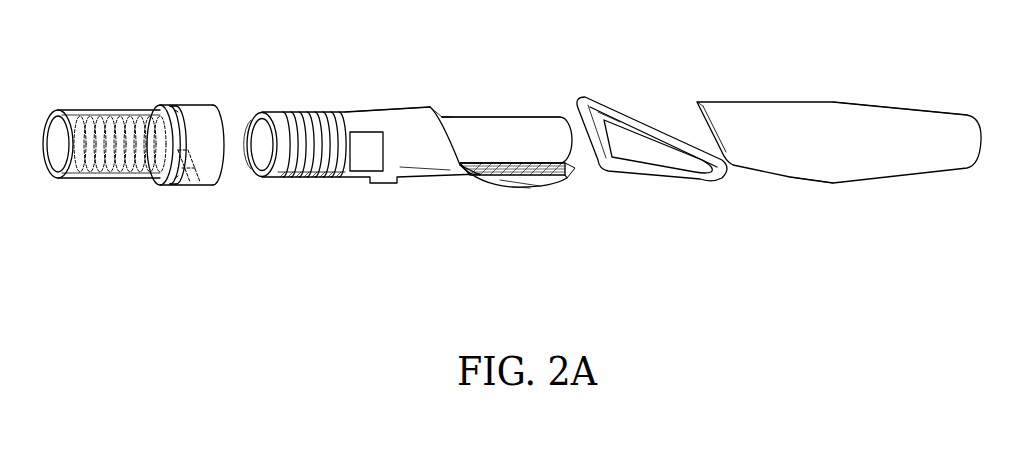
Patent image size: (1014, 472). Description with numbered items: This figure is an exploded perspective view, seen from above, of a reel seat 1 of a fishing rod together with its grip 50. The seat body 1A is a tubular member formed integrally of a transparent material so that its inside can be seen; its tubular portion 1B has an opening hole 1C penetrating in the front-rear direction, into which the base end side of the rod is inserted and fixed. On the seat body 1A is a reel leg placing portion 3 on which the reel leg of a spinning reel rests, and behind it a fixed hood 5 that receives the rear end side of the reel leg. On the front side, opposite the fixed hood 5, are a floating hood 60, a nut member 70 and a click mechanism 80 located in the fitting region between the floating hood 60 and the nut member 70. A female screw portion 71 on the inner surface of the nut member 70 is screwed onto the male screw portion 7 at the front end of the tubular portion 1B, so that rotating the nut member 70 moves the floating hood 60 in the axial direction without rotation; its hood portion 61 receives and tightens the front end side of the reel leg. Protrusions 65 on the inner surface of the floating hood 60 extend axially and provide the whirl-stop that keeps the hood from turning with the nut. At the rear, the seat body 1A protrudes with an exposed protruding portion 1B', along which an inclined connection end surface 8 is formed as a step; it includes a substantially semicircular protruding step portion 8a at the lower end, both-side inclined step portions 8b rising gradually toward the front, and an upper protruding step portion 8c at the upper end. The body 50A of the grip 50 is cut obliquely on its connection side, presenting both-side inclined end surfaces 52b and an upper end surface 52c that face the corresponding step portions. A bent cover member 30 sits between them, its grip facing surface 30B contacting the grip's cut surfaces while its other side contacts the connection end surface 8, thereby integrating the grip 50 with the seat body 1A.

The reel seat 1 is at (482, 43).
The seat body 1A is at (485, 95).
The tubular portion 1B is at (388, 91).
The exposed protruding portion 1B' is at (508, 122).
The opening hole 1C is at (263, 149).
The reel leg placing portion 3 is at (437, 181).
The fixed hood 5 is at (560, 186).
The male screw portion 7 is at (303, 112).
The connection end surface 8 is at (497, 178).
The protruding step portion 8a is at (574, 171).
The both-side inclined step portions 8b is at (535, 190).
The upper protruding step portion 8c is at (448, 117).
The cover member 30 is at (648, 103).
The grip facing surface 30B is at (620, 114).
The grip 50 is at (889, 192).
The body 50A is at (950, 150).
The both-side inclined end surfaces 52b is at (790, 179).
The upper end surface 52c is at (700, 100).
The floating hood 60 is at (192, 104).
The hood portion 61 is at (192, 182).
The protrusions 65 is at (173, 104).
The nut member 70 is at (88, 177).
The female screw portion 71 is at (107, 180).
The click mechanism 80 is at (166, 186).